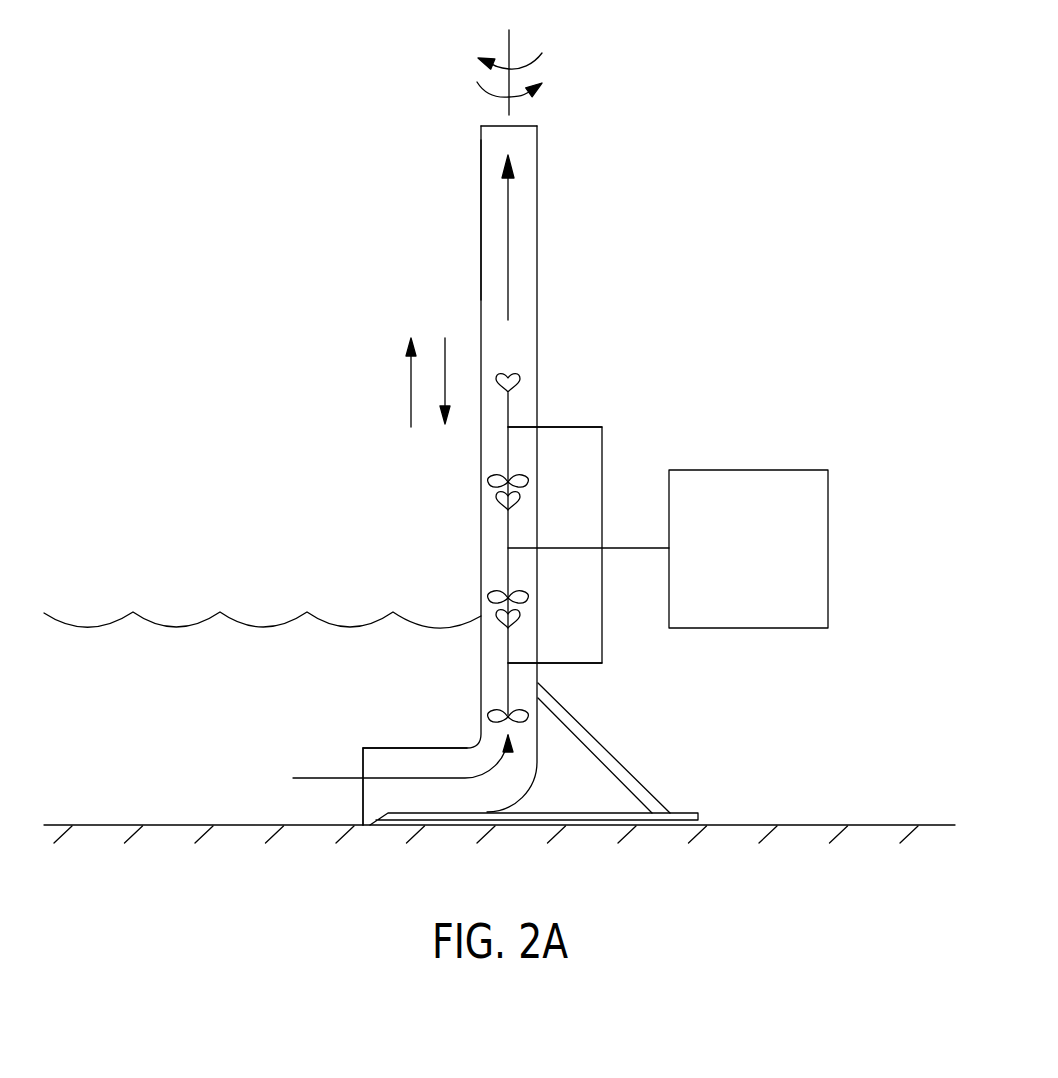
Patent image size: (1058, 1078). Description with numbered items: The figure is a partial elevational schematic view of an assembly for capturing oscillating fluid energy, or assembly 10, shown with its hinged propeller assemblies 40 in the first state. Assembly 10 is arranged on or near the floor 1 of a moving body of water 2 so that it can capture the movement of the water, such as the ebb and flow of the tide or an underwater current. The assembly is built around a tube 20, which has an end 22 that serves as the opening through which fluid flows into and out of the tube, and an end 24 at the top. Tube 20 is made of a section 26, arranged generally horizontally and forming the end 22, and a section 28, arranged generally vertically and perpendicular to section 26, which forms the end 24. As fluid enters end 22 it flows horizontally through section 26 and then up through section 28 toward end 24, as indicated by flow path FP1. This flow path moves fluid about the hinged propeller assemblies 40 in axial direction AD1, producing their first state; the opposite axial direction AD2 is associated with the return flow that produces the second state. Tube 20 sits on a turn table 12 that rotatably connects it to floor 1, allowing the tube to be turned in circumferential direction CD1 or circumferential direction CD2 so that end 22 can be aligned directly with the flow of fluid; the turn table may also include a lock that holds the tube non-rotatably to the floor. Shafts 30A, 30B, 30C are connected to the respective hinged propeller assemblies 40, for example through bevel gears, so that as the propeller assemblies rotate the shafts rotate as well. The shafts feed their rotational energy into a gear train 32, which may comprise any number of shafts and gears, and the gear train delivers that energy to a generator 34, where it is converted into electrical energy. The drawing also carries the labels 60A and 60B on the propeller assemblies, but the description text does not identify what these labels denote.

The floor 1 is at (99, 826).
The body of water 2 is at (93, 627).
The assembly for capturing oscillating fluid energy 10 is at (715, 125).
The turn table 12 is at (683, 810).
The tube 20 is at (538, 300).
The end 22 is at (360, 724).
The end 24 is at (573, 139).
The section 26 is at (437, 747).
The section 28 is at (481, 177).
The shaft 30A is at (590, 427).
The shaft 30B is at (570, 547).
The shaft 30C is at (583, 665).
The gear train 32 is at (603, 461).
The generator 34 is at (828, 533).
The hinged propeller assembly 40 is at (536, 401).
The fan motor 60A is at (520, 380).
The fan blade 60B is at (487, 482).
The flow path FP1 is at (508, 228).
The axial direction AD1 is at (409, 380).
The axial direction AD2 is at (447, 357).
The circumferential direction CD1 is at (492, 96).
The circumferential direction CD2 is at (503, 65).